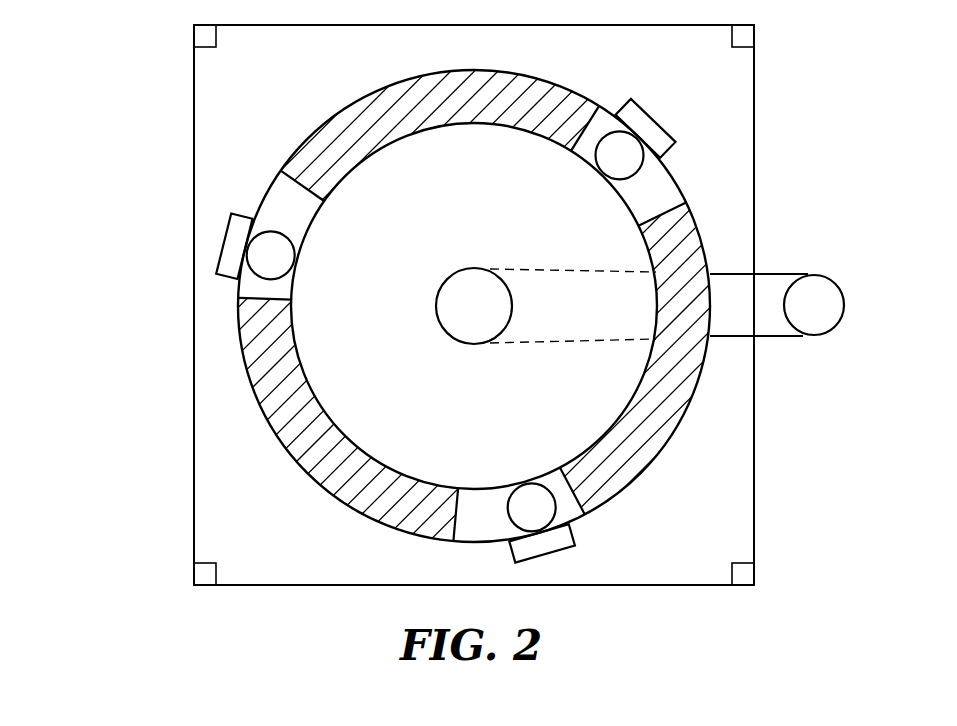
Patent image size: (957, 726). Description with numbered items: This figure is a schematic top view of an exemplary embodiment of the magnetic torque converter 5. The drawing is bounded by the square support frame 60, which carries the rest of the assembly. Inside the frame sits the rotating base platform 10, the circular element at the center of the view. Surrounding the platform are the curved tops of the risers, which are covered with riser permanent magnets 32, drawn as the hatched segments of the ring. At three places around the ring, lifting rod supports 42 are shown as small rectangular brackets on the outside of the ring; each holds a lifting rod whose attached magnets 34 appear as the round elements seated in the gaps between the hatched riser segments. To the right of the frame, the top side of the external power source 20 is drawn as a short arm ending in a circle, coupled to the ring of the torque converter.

The rotary coupling assembly 5 is at (114, 139).
The rotating base platform 10 is at (430, 437).
The external power source 20 is at (818, 290).
The riser permanent magnets 32 is at (323, 453).
The magnets 34 is at (270, 262).
The lifting rod supports 42 is at (232, 243).
The support frame 60 is at (193, 575).